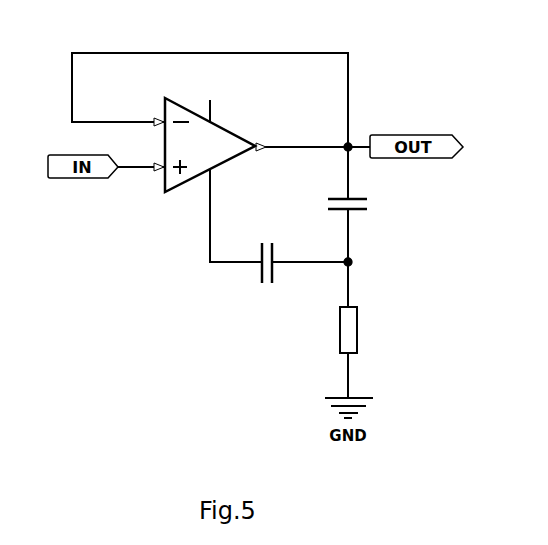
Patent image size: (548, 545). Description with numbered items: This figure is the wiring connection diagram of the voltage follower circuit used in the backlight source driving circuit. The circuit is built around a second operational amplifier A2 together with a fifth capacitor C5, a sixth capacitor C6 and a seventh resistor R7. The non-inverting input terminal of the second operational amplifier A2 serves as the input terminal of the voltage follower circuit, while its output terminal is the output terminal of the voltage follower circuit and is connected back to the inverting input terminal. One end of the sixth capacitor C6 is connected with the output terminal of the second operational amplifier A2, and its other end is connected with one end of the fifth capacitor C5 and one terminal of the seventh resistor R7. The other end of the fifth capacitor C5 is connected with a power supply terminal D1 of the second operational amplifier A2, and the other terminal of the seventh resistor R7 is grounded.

The second operational amplifier A2 is at (210, 134).
The power supply terminal D1 is at (223, 200).
The fifth capacitor C5 is at (263, 251).
The sixth capacitor C6 is at (359, 201).
The seventh resistor R7 is at (362, 330).